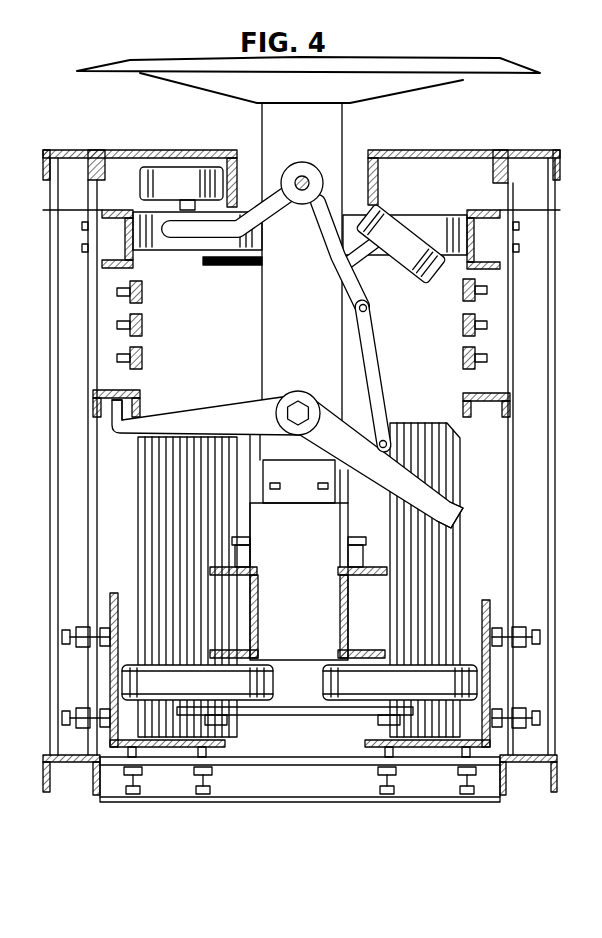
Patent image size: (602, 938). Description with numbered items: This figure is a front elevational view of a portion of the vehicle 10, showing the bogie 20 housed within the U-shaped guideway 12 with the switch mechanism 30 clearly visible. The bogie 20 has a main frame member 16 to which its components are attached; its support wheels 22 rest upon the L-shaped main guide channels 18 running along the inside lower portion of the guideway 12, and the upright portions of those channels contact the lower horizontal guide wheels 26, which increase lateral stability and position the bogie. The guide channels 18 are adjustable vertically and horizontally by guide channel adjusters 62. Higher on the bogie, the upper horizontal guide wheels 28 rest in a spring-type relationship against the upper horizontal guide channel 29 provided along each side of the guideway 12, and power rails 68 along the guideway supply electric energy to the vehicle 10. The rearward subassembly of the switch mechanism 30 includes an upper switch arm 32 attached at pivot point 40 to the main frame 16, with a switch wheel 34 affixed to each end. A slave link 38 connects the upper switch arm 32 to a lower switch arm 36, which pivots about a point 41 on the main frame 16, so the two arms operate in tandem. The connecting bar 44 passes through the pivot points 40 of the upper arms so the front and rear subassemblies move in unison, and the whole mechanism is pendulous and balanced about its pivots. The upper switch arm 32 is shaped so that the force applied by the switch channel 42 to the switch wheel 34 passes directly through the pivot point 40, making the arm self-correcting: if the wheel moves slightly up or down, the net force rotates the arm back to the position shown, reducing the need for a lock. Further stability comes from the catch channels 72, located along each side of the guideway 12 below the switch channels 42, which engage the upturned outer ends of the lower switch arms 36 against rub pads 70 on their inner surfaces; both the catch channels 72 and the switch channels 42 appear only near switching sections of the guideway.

The vehicle 10 is at (492, 57).
The guideway 12 is at (552, 138).
The main frame member 16 is at (278, 130).
The guide channels 18 is at (110, 605).
The bogie 20 is at (422, 176).
The support wheels 22 is at (160, 520).
The lower horizontal guide wheels 26 is at (158, 676).
The upper horizontal guide wheels 28 is at (130, 242).
The upper horizontal guide channel 29 is at (43, 210).
The switch mechanism 30 is at (238, 300).
The upper switch arm 32 is at (333, 256).
The switch wheels 34 is at (160, 166).
The lower switch arm 36 is at (215, 415).
The slave link 38 is at (385, 372).
The pivot point 40 is at (303, 178).
The pivot point 41 is at (300, 392).
The switch channel 42 is at (130, 150).
The connecting bar 44 is at (296, 200).
The guide channel adjusters 62 is at (72, 712).
The power rails 68 is at (142, 352).
The rub pads 70 is at (142, 405).
The catch channels 72 is at (97, 392).